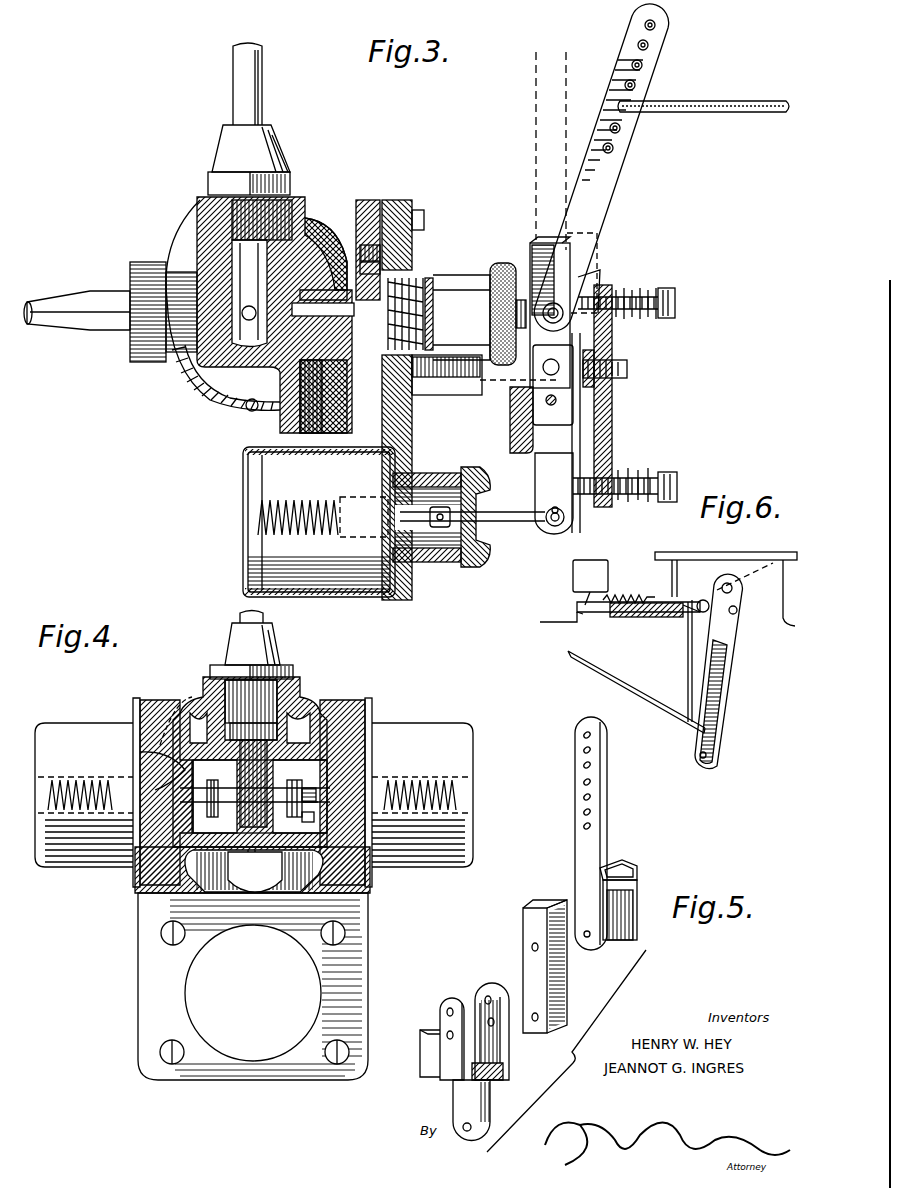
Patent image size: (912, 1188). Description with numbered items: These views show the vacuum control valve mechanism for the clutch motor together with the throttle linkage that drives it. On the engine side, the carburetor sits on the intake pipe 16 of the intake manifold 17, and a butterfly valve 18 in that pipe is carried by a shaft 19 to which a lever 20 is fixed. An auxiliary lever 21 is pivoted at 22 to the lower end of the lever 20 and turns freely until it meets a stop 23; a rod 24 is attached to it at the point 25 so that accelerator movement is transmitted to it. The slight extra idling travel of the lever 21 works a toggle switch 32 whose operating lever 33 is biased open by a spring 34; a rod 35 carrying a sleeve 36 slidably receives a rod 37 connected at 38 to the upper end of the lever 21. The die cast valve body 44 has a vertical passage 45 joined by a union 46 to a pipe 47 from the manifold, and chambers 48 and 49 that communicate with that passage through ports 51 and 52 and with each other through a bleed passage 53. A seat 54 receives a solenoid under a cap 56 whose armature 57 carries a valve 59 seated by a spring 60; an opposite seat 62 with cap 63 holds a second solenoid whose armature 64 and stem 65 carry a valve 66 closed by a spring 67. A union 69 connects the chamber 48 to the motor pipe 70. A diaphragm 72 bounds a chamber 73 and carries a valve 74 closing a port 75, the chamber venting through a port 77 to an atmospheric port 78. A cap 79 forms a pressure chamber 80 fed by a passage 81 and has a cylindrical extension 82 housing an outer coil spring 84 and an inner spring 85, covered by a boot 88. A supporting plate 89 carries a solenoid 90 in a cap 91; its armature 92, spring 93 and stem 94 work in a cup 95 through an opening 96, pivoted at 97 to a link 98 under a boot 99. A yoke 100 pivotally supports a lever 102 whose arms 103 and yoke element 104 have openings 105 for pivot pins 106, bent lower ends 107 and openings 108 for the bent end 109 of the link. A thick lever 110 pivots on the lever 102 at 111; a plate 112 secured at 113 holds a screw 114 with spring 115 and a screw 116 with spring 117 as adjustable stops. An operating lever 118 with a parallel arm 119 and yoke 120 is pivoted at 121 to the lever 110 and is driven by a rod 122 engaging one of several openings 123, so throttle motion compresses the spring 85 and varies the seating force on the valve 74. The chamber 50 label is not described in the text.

In FIG. 6, the intake pipe 16 is at (672, 552).
In FIG. 6, the intake manifold 17 is at (552, 618).
In FIG. 6, the butterfly valve 18 is at (752, 575).
In FIG. 6, the shaft 19 is at (735, 592).
In FIG. 6, the lever 20 is at (730, 660).
In FIG. 6, the auxiliary lever 21 is at (692, 660).
In FIG. 6, the pivot 22 is at (720, 752).
In FIG. 6, the stop 23 is at (737, 612).
In FIG. 6, the rod 24 is at (665, 700).
In FIG. 6, the connection point 25 is at (720, 710).
In FIG. 6, the switch 32 is at (573, 570).
In FIG. 6, the operating lever 33 is at (577, 606).
In FIG. 6, the spring 34 is at (628, 618).
In FIG. 6, the rod 35 is at (592, 614).
In FIG. 6, the sleeve 36 is at (618, 617).
In FIG. 6, the rod 37 is at (678, 618).
In FIG. 6, the connection 38 is at (703, 600).
In FIG. 3, the valve body 44 is at (200, 200).
In FIG. 4, the valve body 44 is at (158, 700).
In FIG. 3, the vertical passage 45 is at (240, 290).
In FIG. 4, the vertical passage 45 is at (254, 783).
In FIG. 3, the union 46 is at (285, 148).
In FIG. 4, the union 46 is at (282, 645).
In FIG. 3, the pipe 47 is at (263, 105).
In FIG. 4, the pipe 47 is at (265, 618).
In FIG. 4, the chamber 48 is at (192, 818).
In FIG. 4, the chamber 49 is at (315, 785).
In FIG. 4, the valve chamber 50 is at (183, 790).
In FIG. 4, the port 51 is at (125, 770).
In FIG. 4, the port 52 is at (284, 783).
In FIG. 3, the bleed passage 53 is at (240, 312).
In FIG. 4, the circular seat 54 is at (170, 700).
In FIG. 4, the protective cap 56 is at (70, 712).
In FIG. 4, the armature 57 is at (88, 780).
In FIG. 4, the valve 59 is at (213, 826).
In FIG. 4, the spring 60 is at (85, 779).
In FIG. 4, the circular seat 62 is at (350, 700).
In FIG. 4, the cap 63 is at (448, 718).
In FIG. 4, the armature 64 is at (385, 780).
In FIG. 4, the stem 65 is at (315, 810).
In FIG. 4, the valve 66 is at (290, 820).
In FIG. 4, the spring 67 is at (432, 780).
In FIG. 3, the union 69 is at (128, 275).
In FIG. 3, the pipe 70 is at (55, 292).
In FIG. 3, the diaphragm 72 is at (368, 200).
In FIG. 3, the chamber 73 is at (385, 248).
In FIG. 3, the valve 74 is at (323, 313).
In FIG. 3, the port 75 is at (330, 262).
In FIG. 3, the port 77 is at (323, 396).
In FIG. 3, the port 78 is at (320, 435).
In FIG. 4, the port 78 is at (258, 895).
In FIG. 3, the cap 79 is at (395, 200).
In FIG. 3, the pressure chamber 80 is at (385, 265).
In FIG. 4, the passage 81 is at (140, 752).
In FIG. 3, the cylindrical extension 82 is at (463, 275).
In FIG. 3, the coil spring 84 is at (425, 300).
In FIG. 3, the inner coil spring 85 is at (433, 310).
In FIG. 3, the rubber boot 88 is at (505, 260).
In FIG. 3, the supporting plate 89 is at (420, 210).
In FIG. 4, the supporting plate 89 is at (138, 966).
In FIG. 3, the solenoid 90 is at (270, 480).
In FIG. 3, the cap 91 is at (248, 555).
In FIG. 4, the cap 91 is at (253, 993).
In FIG. 3, the armature 92 is at (355, 500).
In FIG. 3, the spring 93 is at (325, 500).
In FIG. 3, the stem 94 is at (425, 495).
In FIG. 3, the cup 95 is at (445, 565).
In FIG. 3, the opening 96 is at (420, 470).
In FIG. 3, the pivot 97 is at (440, 530).
In FIG. 3, the link 98 is at (510, 510).
In FIG. 3, the boot 99 is at (475, 467).
In FIG. 3, the yoke 100 is at (470, 385).
In FIG. 3, the lever 102 is at (535, 460).
In FIG. 5, the lever 102 is at (450, 1102).
In FIG. 3, the arms 103 is at (530, 400).
In FIG. 5, the arms 103 is at (484, 983).
In FIG. 3, the yoke element 104 is at (510, 425).
In FIG. 5, the yoke element 104 is at (422, 1050).
In FIG. 5, the openings 105 is at (446, 1010).
In FIG. 3, the pivot pins 106 is at (518, 377).
In FIG. 5, the bent portion 107 is at (503, 1075).
In FIG. 3, the openings 108 is at (565, 518).
In FIG. 5, the openings 108 is at (466, 1131).
In FIG. 3, the bent end 109 is at (545, 522).
In FIG. 3, the lever 110 is at (530, 235).
In FIG. 5, the lever 110 is at (538, 900).
In FIG. 3, the pivot 111 is at (558, 403).
In FIG. 3, the plate 112 is at (612, 420).
In FIG. 3, the fastening 113 is at (628, 369).
In FIG. 3, the screw 114 is at (635, 295).
In FIG. 3, the spring 115 is at (668, 288).
In FIG. 3, the screw 116 is at (645, 470).
In FIG. 3, the spring 117 is at (660, 470).
In FIG. 3, the operating lever 118 is at (585, 108).
In FIG. 5, the operating lever 118 is at (608, 760).
In FIG. 5, the parallel arm 119 is at (620, 862).
In FIG. 3, the yoke 120 is at (600, 250).
In FIG. 5, the yoke 120 is at (637, 884).
In FIG. 3, the pivot 121 is at (563, 315).
In FIG. 3, the rod 122 is at (725, 100).
In FIG. 3, the openings 123 is at (620, 130).
In FIG. 5, the openings 123 is at (583, 797).